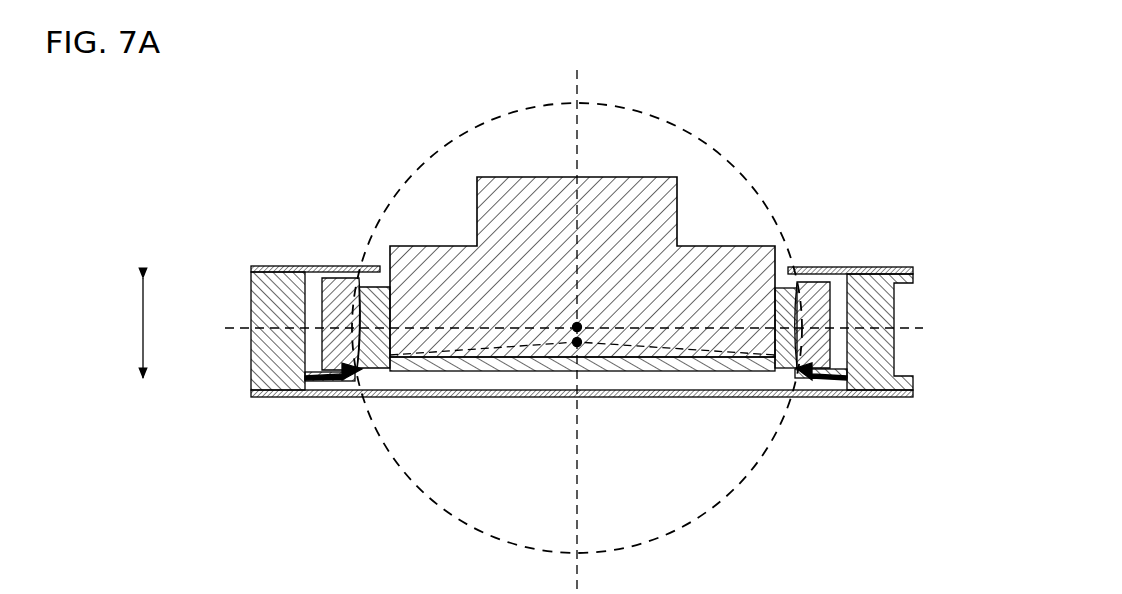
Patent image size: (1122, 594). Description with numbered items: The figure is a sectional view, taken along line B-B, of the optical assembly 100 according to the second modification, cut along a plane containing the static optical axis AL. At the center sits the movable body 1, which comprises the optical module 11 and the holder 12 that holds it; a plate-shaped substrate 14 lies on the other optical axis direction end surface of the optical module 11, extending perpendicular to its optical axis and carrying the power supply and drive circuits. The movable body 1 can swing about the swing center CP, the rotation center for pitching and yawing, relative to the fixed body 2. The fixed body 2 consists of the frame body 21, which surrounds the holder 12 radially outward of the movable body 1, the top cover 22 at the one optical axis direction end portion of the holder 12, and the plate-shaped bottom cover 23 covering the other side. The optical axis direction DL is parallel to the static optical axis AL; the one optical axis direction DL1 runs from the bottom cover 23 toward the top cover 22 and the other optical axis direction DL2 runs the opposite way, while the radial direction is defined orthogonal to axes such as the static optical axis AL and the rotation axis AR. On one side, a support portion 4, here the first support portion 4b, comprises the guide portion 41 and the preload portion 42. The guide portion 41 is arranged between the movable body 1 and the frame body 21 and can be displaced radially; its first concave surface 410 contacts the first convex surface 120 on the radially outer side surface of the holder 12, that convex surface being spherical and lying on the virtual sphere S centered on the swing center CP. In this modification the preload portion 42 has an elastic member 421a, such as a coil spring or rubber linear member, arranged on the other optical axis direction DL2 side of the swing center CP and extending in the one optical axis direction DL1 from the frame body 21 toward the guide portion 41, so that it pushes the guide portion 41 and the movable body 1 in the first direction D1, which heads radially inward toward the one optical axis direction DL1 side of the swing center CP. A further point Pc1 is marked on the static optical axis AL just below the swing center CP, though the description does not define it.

The optical assembly 100 is at (288, 120).
The movable body 1 is at (448, 230).
The optical module 11 is at (522, 187).
The holder 12 is at (373, 298).
The substrate 14 is at (660, 372).
The fixed body 2 is at (541, 328).
The frame body 21 is at (258, 300).
The top cover 22 is at (284, 266).
The bottom cover 23 is at (558, 403).
The support portion 4 is at (844, 401).
The guide portion 41 is at (793, 380).
The preload portion 42 is at (847, 385).
The first support portion 4b is at (826, 380).
The elastic member 421a is at (884, 412).
The first concave surface 410 is at (790, 318).
The first convex surface 120 is at (805, 305).
The static optical axis AL is at (578, 88).
The rotation axis AR is at (593, 330).
The swing center CP is at (582, 320).
The contact point Pc1 is at (572, 348).
The virtual sphere S is at (410, 478).
The first direction D1 is at (338, 378).
The optical axis direction DL is at (123, 328).
The one optical axis direction DL1 is at (145, 255).
The other optical axis direction DL2 is at (145, 405).